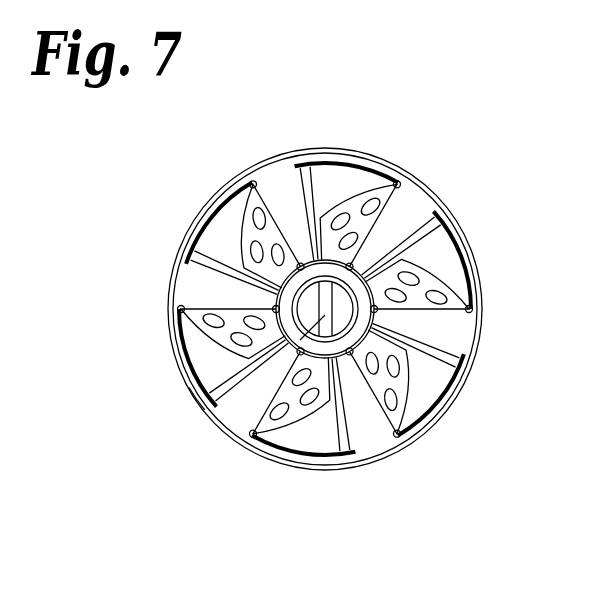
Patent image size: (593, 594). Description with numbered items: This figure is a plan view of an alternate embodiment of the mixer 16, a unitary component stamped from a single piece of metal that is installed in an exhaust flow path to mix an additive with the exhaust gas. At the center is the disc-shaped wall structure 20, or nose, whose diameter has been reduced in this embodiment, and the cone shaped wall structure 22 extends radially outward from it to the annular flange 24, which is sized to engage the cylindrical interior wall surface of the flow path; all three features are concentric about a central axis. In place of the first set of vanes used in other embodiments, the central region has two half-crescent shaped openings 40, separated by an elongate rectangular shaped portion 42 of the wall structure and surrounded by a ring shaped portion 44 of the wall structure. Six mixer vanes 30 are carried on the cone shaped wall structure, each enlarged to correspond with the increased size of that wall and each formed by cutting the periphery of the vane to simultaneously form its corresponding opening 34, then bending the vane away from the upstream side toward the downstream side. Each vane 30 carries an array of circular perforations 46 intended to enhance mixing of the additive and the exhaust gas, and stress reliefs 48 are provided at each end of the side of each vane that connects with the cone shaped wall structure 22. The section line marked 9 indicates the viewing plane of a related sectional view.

The mixer 16 is at (406, 239).
The disc-shaped wall structure 20 is at (286, 309).
The cone shaped wall structure 22 is at (325, 352).
The annular flange 24 is at (504, 408).
The mixer vanes 30 is at (319, 298).
The opening 34 is at (306, 306).
The half-crescent shaped openings 40 is at (317, 309).
The rectangular shaped portion 42 is at (195, 433).
The ring shaped portion 44 is at (380, 471).
The perforations 46 is at (342, 309).
The stress reliefs 48 is at (269, 324).
The section line 9- 9 is at (213, 100).